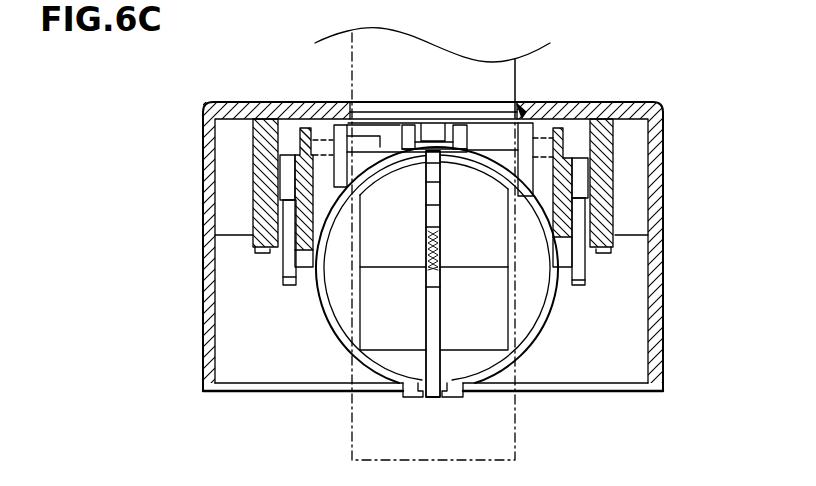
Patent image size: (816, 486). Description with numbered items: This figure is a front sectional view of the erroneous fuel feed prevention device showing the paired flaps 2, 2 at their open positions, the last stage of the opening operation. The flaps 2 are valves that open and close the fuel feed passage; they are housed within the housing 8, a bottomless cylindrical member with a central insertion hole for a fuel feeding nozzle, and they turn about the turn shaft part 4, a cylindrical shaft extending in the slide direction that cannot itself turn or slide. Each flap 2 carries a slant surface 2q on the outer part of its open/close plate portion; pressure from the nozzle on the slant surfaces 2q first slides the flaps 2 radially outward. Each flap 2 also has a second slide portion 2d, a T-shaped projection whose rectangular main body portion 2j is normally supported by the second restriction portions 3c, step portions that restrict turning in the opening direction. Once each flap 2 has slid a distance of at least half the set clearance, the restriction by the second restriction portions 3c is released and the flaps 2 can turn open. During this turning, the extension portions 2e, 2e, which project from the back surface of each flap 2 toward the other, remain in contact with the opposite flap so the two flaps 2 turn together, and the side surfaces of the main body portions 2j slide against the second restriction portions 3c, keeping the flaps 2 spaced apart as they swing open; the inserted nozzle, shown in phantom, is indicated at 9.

The flap 2 is at (328, 330).
The second slide portion 2d is at (290, 214).
The extension portion 2e is at (435, 213).
The main body portion 2j is at (441, 199).
The slant surface 2q is at (343, 292).
The second restriction portion 3c is at (298, 172).
The turn shaft part 4 is at (367, 100).
The housing 8 is at (616, 93).
The lever 9 is at (352, 66).